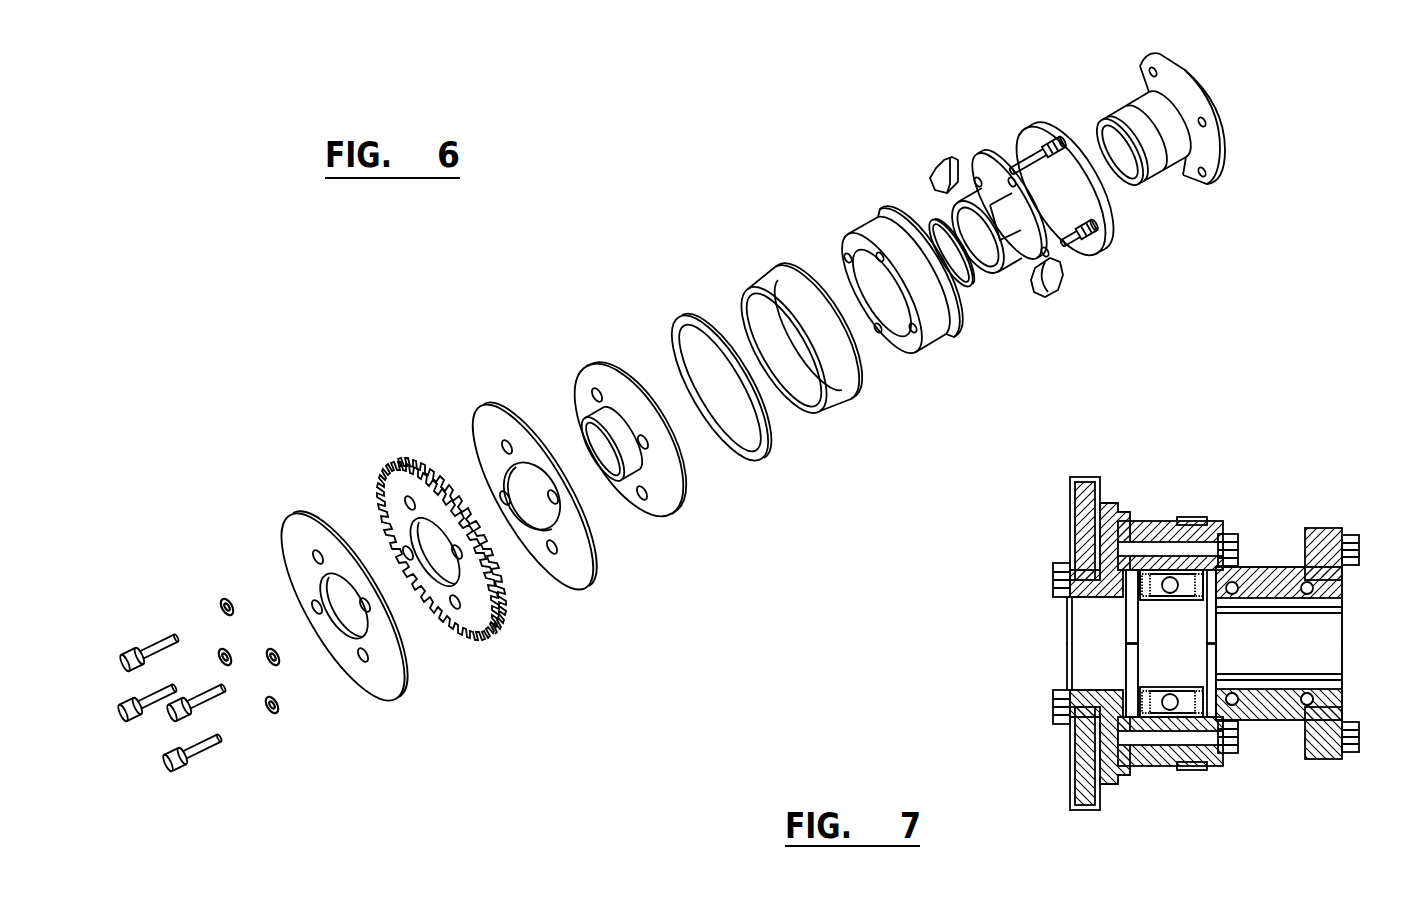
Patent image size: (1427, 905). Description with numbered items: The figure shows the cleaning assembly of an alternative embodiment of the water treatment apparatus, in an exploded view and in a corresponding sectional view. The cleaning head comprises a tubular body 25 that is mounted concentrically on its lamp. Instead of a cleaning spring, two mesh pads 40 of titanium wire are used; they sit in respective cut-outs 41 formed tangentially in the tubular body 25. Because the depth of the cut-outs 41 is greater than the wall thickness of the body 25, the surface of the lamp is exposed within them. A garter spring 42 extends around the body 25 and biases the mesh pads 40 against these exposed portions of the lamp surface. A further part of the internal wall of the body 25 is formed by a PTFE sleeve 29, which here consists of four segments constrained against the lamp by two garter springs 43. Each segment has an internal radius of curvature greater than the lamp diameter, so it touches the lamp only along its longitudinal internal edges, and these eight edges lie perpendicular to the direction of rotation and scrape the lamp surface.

In FIG. 6, the tubular body 25 is at (1058, 195).
In FIG. 7, the tubular body 25 is at (1262, 567).
In FIG. 6, the PTFE sleeve 29 is at (1225, 182).
In FIG. 6, the mesh pads 40 is at (945, 162).
In FIG. 7, the mesh pads 40 is at (1162, 597).
In FIG. 6, the cut-outs 41 is at (1010, 268).
In FIG. 7, the garter spring 42 is at (1168, 705).
In FIG. 7, the garter springs 43 is at (1232, 690).